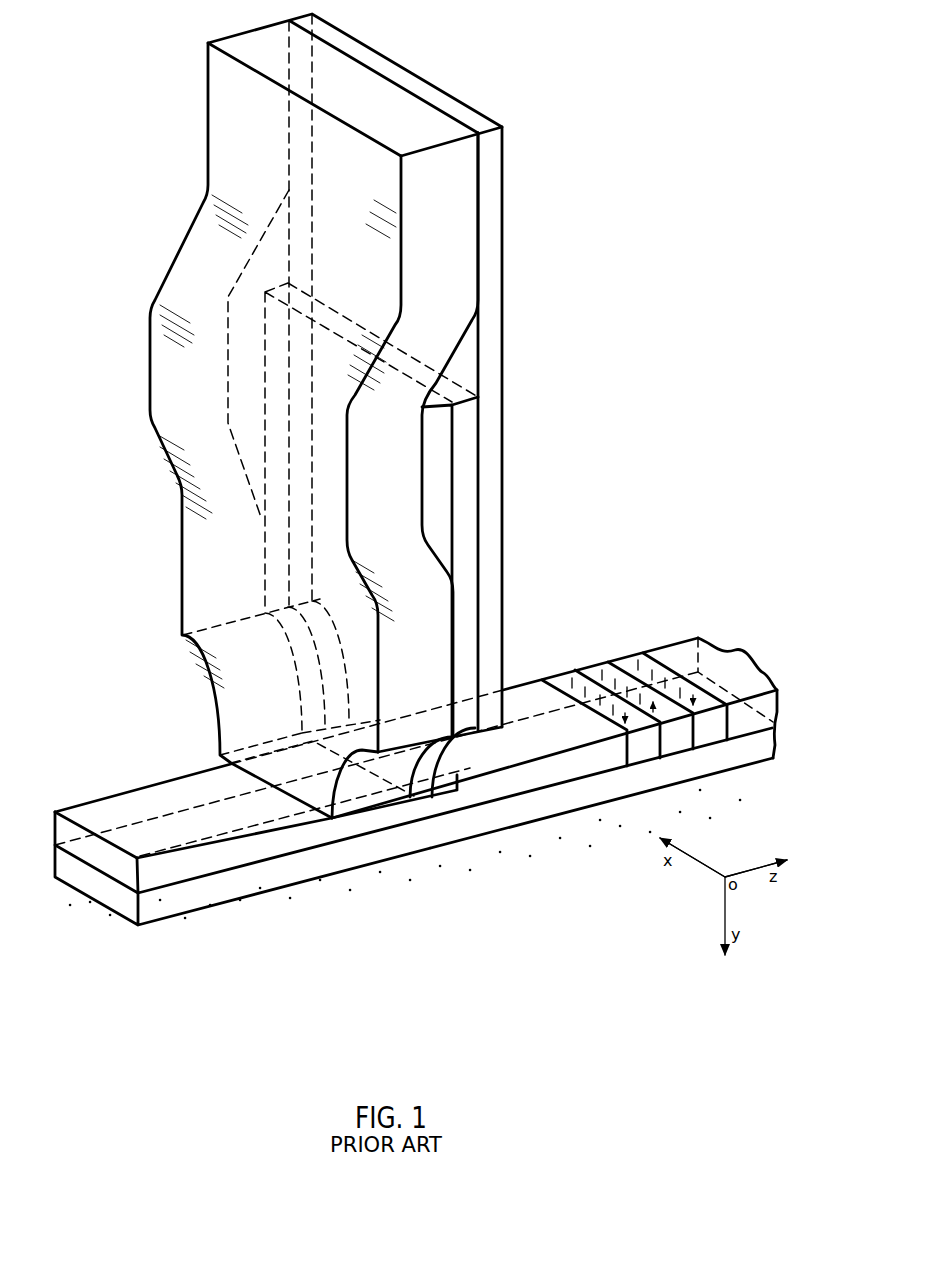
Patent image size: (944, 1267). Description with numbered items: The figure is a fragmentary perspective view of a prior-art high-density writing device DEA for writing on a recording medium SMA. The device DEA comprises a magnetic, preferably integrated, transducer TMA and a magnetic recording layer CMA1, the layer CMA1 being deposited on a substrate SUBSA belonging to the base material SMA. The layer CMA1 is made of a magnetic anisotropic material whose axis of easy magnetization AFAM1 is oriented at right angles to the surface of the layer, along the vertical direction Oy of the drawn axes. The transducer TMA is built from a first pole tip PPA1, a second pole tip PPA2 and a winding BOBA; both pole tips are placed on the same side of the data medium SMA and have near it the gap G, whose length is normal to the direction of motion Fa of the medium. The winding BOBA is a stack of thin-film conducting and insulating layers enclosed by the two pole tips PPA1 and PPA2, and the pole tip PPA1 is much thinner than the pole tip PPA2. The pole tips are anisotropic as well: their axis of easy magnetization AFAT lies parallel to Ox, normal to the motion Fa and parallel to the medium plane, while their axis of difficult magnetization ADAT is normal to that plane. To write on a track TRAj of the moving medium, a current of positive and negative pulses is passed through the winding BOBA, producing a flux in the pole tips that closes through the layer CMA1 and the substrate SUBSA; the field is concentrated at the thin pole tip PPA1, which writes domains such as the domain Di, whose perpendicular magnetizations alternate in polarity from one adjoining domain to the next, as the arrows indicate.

The magnetic transducer TMA is at (377, 441).
The first pole tip PPA1 is at (490, 278).
The second pole tip PPA2 is at (432, 340).
The winding BOBA is at (462, 462).
The gap G is at (432, 800).
The writing device DEA is at (184, 201).
The axis of easy magnetization of the pole tips AFAT is at (300, 440).
The axis of difficult magnetization of the pole tips ADAT is at (235, 425).
The recording medium SMA is at (402, 781).
The magnetic recording layer CMA1 is at (138, 895).
The substrate SUBSA is at (230, 940).
The axis of easy magnetization of the magnetic layer AFAM1 is at (242, 838).
The track TRAj is at (100, 813).
The magnetic domain Di is at (562, 682).
The direction of motion Fa is at (470, 890).